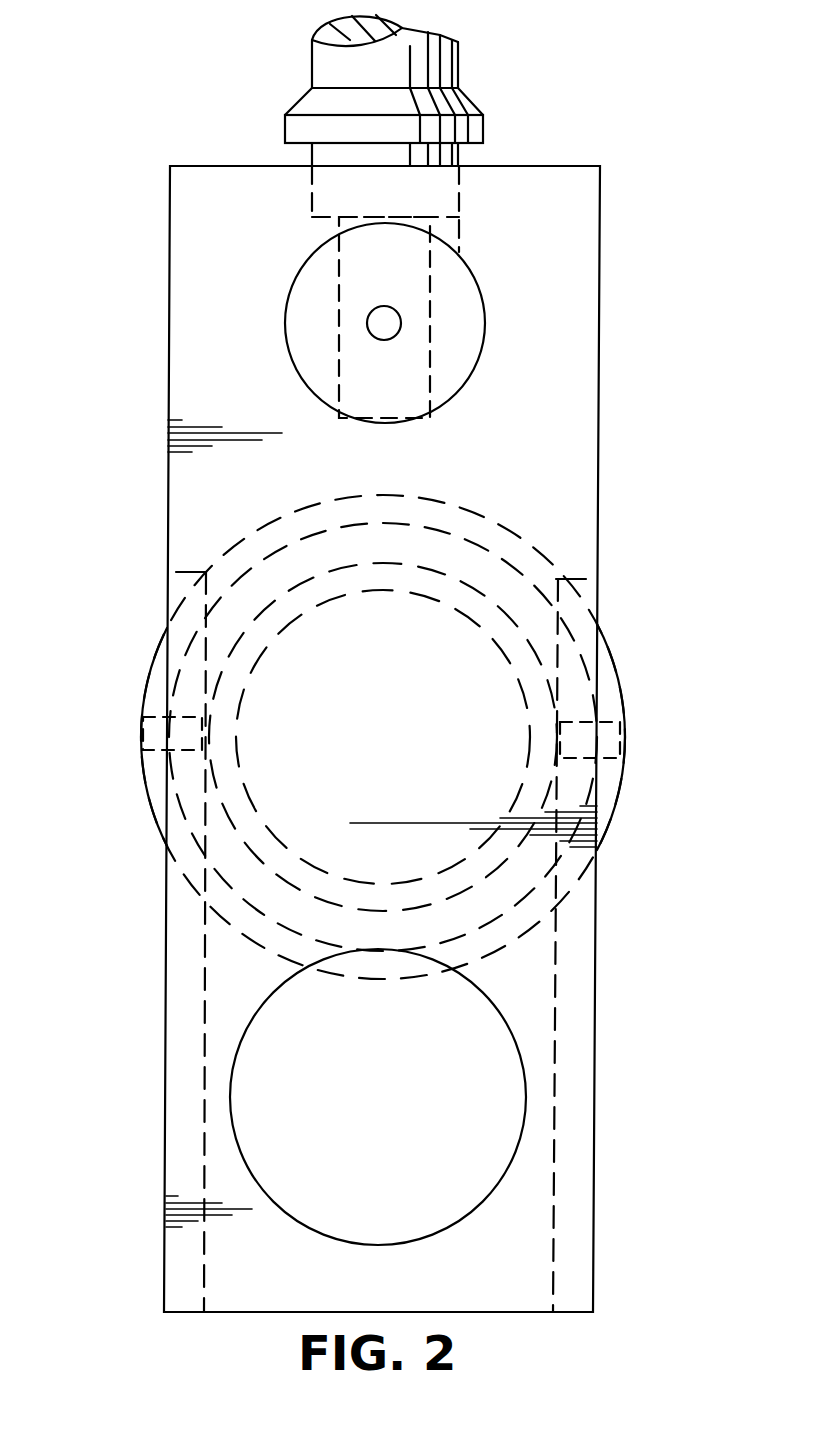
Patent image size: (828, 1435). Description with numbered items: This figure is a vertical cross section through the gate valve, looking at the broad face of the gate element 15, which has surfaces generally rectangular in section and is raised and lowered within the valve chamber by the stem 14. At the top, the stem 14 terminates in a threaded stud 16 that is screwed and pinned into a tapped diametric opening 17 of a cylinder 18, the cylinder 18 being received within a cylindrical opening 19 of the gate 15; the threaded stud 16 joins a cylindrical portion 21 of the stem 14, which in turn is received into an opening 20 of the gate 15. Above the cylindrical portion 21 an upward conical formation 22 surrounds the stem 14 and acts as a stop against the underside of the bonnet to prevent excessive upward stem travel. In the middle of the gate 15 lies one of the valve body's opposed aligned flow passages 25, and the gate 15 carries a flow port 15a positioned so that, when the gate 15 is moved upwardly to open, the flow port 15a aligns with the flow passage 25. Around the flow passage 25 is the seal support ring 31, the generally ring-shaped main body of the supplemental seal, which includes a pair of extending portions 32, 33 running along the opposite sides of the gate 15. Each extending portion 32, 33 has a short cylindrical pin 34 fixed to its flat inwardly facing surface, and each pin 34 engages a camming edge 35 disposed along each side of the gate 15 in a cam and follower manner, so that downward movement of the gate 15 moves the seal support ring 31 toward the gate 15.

The stem 14 is at (458, 62).
The upward conical formation 22 is at (483, 128).
The cylindrical portion 21 is at (458, 154).
The opening 20 is at (312, 180).
The tapped diametric opening 17 is at (342, 305).
The threaded stud 16 is at (340, 372).
The cylindrical opening 19 is at (480, 283).
The cylinder 18 is at (462, 322).
The gate element 15 is at (600, 432).
The seal support ring 31 is at (575, 538).
The extending portion 32 is at (145, 675).
The extending portion 33 is at (617, 688).
The cylindrical pin 34 is at (143, 735).
The flow passage 25 is at (300, 855).
The camming edge 35 is at (190, 1002).
The flow port 15a is at (236, 1140).